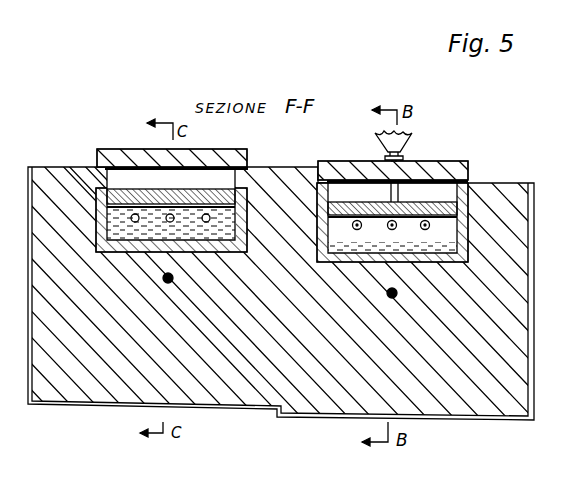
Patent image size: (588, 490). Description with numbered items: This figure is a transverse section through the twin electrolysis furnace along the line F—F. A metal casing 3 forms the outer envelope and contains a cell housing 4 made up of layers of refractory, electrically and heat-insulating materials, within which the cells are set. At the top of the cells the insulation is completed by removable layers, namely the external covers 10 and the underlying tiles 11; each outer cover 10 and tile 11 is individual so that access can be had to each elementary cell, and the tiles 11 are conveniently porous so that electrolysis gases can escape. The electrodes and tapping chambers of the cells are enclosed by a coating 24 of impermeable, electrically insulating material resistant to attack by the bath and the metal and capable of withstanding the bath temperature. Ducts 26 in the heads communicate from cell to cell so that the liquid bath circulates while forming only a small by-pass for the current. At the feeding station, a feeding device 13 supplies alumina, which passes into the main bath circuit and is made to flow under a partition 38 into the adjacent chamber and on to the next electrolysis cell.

The metal casing 3 is at (460, 418).
The cell housing 4 is at (100, 392).
The external cover 10 is at (227, 162).
The tile 11 is at (183, 198).
The feeding device 13 is at (390, 137).
The coating 24 is at (97, 214).
The duct 26 is at (135, 214).
The partition 38 is at (447, 232).